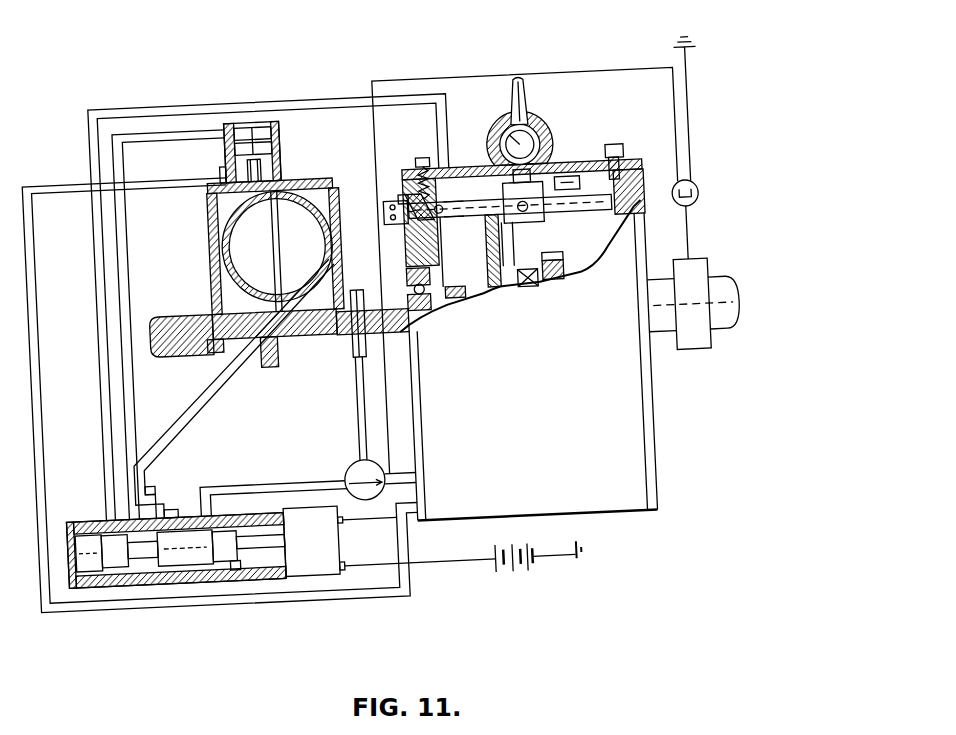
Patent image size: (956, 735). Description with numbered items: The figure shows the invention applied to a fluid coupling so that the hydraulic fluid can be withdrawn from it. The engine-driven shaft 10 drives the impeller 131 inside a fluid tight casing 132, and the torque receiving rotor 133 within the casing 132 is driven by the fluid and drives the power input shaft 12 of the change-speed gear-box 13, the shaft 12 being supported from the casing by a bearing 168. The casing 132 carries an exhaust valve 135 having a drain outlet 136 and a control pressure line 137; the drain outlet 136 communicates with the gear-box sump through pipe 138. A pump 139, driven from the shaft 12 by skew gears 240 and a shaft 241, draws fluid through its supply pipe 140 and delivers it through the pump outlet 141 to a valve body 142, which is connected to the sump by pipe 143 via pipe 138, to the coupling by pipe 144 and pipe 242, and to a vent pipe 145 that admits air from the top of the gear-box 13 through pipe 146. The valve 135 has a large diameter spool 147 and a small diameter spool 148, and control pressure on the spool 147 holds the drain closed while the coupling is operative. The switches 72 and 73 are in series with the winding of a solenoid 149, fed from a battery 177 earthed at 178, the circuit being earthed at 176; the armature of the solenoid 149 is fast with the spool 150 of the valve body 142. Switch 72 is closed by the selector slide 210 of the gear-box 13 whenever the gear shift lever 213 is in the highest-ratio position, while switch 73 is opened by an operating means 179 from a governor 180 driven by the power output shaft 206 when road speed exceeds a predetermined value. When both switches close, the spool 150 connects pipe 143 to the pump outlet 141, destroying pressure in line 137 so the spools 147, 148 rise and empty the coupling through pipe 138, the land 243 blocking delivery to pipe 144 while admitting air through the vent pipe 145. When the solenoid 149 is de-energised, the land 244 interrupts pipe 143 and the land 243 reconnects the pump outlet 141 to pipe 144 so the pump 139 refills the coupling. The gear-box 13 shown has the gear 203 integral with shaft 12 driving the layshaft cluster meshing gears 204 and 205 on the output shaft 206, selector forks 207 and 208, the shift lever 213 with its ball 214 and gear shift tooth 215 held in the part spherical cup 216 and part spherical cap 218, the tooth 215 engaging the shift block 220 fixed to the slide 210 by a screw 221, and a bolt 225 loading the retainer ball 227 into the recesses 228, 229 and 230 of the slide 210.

The engine-driven shaft 10 is at (190, 325).
The power input shaft 12 is at (308, 338).
The change-speed gear-box 13 is at (532, 408).
The switch 72 is at (383, 208).
The switch 73 is at (700, 202).
The impeller 131 is at (303, 253).
The casing 132 is at (207, 202).
The torque receiving rotor 133 is at (263, 253).
The exhaust valve 135 is at (282, 133).
The drain outlet 136 is at (228, 177).
The control pressure line 137 is at (155, 137).
The pipe 138 is at (70, 187).
The pump 139 is at (348, 474).
The supply pipe 140 is at (418, 480).
The pump outlet 141 is at (255, 487).
The valve body 142 is at (178, 583).
The pipe 143 is at (222, 587).
The pipe 144 is at (170, 513).
The vent pipe 145 is at (292, 108).
The pipe 146 is at (150, 490).
The large diameter spool 147 is at (273, 152).
The small diameter spool 148 is at (262, 172).
The solenoid 149 is at (327, 548).
The spool 150 is at (90, 543).
The bearing 168 is at (417, 300).
The earth 176 is at (577, 562).
The battery 177 is at (497, 560).
The earth 178 is at (680, 43).
The operating means 179 is at (690, 228).
The governor 180 is at (688, 340).
The gear 203 is at (458, 305).
The gear 204 is at (530, 287).
The gear 205 is at (565, 278).
The power output shaft 206 is at (717, 337).
The selector fork 207 is at (495, 288).
The selector fork 208 is at (577, 250).
The selector slide 210 is at (453, 207).
The gear shift lever 213 is at (517, 103).
The ball 214 is at (520, 145).
The gear shift tooth 215 is at (570, 158).
The part spherical cup 216 is at (530, 180).
The part spherical cap 218 is at (538, 130).
The shift block 220 is at (512, 217).
The screw 221 is at (527, 212).
The bolt 225 is at (422, 168).
The retainer ball 227 is at (425, 212).
The recess 228 is at (445, 210).
The recess 229 is at (430, 218).
The recess 230 is at (403, 200).
The skew gears 240 is at (355, 290).
The shaft 241 is at (355, 390).
The pipe 242 is at (223, 375).
The land 243 is at (143, 550).
The land 244 is at (233, 565).